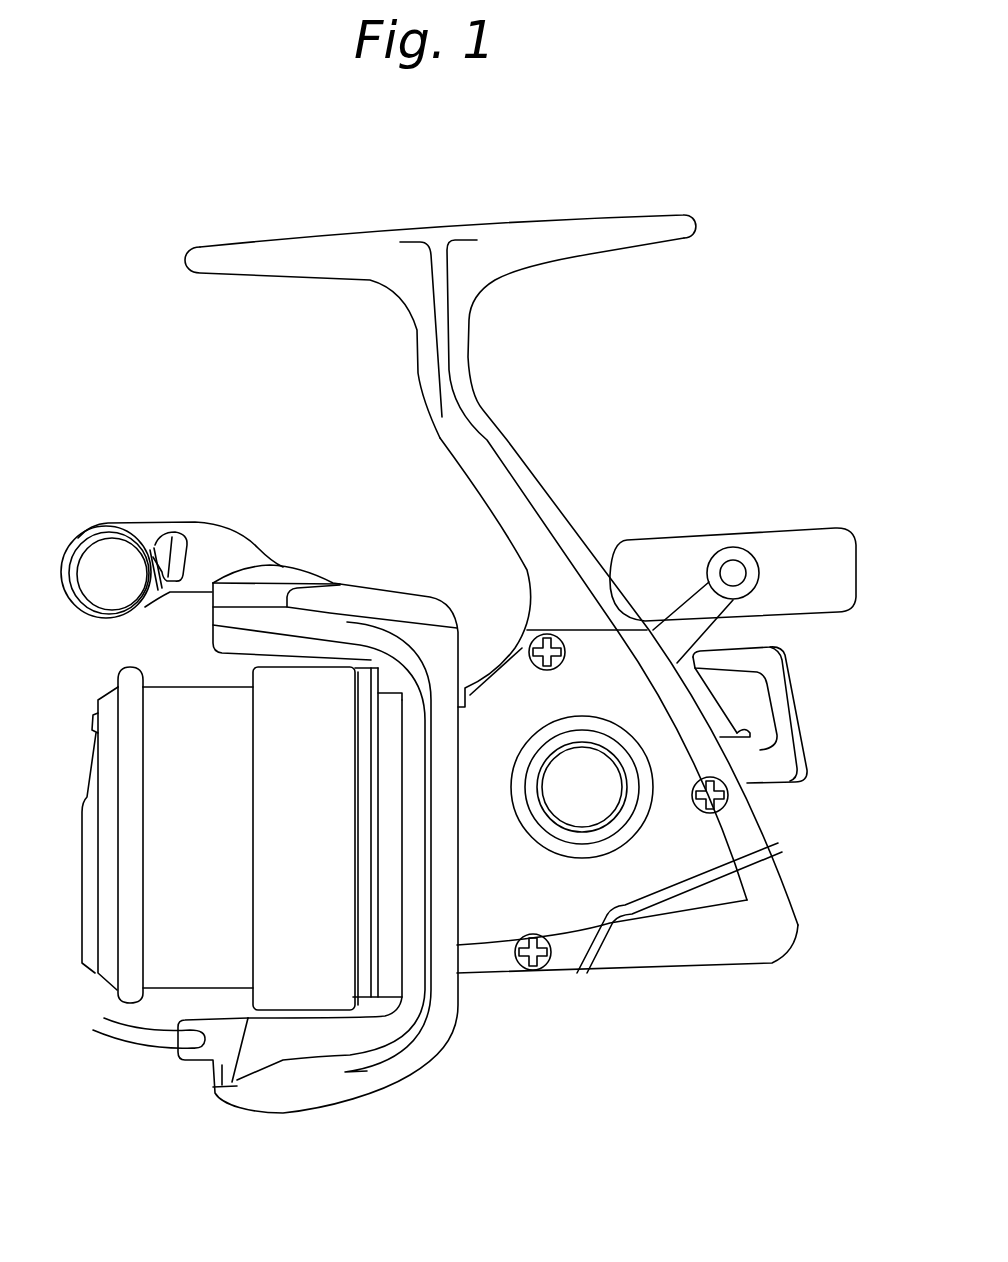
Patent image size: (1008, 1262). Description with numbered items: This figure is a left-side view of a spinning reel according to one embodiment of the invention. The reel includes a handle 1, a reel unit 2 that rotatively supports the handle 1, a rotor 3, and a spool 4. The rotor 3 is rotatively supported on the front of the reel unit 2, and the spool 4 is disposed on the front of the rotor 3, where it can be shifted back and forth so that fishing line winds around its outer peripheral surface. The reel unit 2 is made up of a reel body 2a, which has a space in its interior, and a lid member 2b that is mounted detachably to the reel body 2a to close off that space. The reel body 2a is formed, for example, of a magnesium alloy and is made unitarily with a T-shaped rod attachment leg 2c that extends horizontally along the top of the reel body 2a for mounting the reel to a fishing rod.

The handle 1 is at (707, 530).
The reel unit 2 is at (560, 594).
The reel body 2a is at (562, 613).
The lid member 2b is at (690, 853).
The T-shaped rod attachment leg 2c is at (588, 242).
The rotor 3 is at (431, 1039).
The spool 4 is at (165, 970).